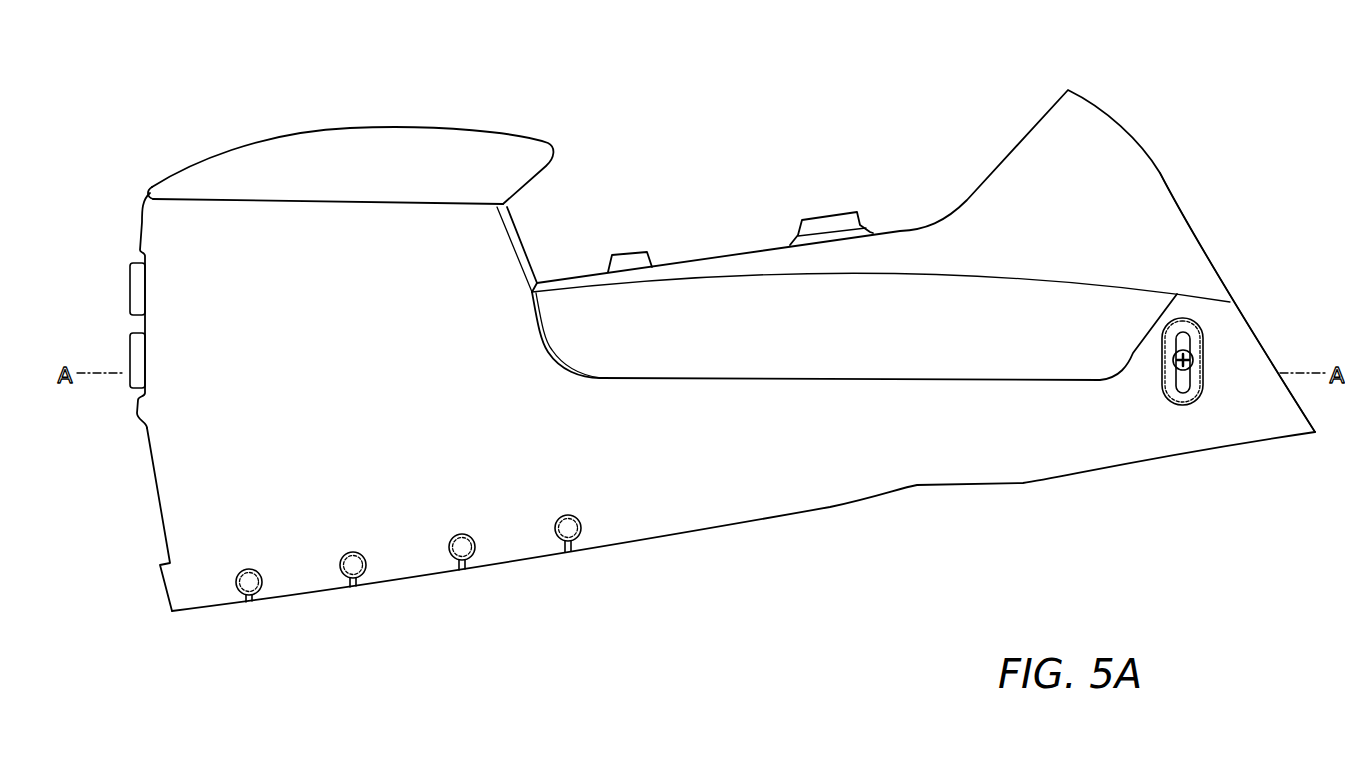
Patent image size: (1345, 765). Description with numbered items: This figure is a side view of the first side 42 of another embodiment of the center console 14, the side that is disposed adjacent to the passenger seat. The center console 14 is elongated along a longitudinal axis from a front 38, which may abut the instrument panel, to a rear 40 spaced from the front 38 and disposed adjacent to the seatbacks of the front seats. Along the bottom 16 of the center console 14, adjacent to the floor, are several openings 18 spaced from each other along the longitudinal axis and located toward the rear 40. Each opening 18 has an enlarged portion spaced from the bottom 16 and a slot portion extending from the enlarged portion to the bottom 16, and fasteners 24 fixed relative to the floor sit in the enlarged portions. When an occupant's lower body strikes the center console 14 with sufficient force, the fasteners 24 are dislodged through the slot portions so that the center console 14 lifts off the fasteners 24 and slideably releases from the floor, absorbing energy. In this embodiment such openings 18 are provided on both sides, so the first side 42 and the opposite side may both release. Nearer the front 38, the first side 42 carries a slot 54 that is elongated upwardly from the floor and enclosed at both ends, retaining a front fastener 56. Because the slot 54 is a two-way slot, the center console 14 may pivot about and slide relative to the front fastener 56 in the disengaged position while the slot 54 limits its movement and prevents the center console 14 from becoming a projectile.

The center console 14 is at (797, 131).
The bottom 16 is at (780, 519).
The openings 18 is at (253, 606).
The fasteners 24 is at (248, 569).
The front 38 is at (1180, 222).
The rear 40 is at (158, 507).
The first side 42 is at (824, 324).
The slots 54 is at (1190, 381).
The front fastener 56 is at (1185, 340).